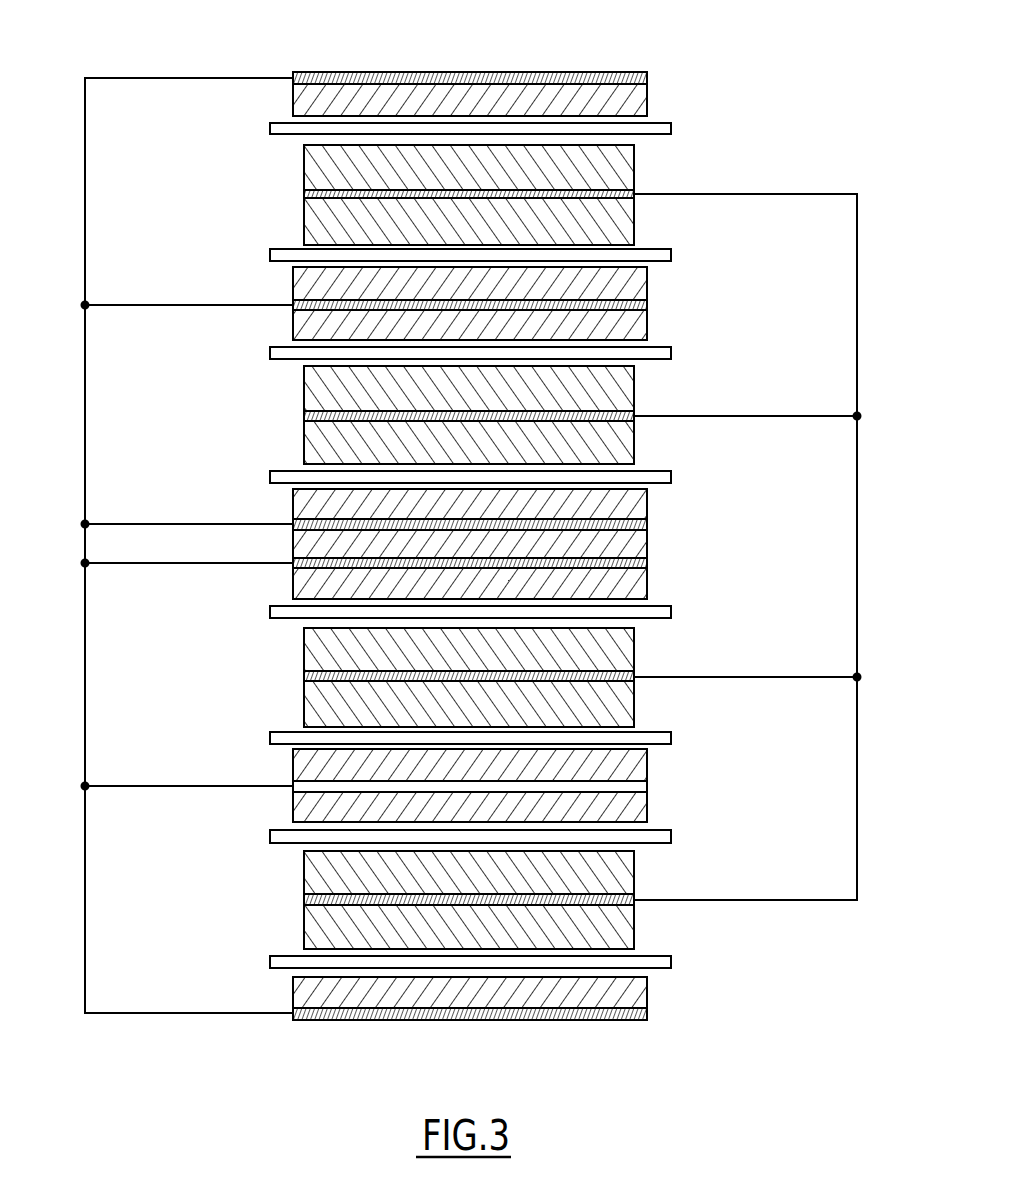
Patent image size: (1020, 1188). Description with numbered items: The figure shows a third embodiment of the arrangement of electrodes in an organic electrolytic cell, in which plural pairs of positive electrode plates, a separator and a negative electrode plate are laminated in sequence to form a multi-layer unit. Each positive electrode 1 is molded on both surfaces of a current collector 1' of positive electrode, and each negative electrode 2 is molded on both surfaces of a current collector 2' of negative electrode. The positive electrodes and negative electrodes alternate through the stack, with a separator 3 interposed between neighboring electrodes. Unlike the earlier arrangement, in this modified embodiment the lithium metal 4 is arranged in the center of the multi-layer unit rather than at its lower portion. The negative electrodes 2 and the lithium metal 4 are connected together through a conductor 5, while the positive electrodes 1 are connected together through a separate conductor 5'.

The positive electrode 1 is at (505, 547).
The current collector of positive electrode 1' is at (431, 548).
The negative electrode 2 is at (430, 546).
The current collector of negative electrode 2' is at (511, 549).
The separator 3 is at (671, 128).
The lithium metal 4 is at (293, 548).
The conductor 5 is at (188, 522).
The conductor 5' is at (772, 518).